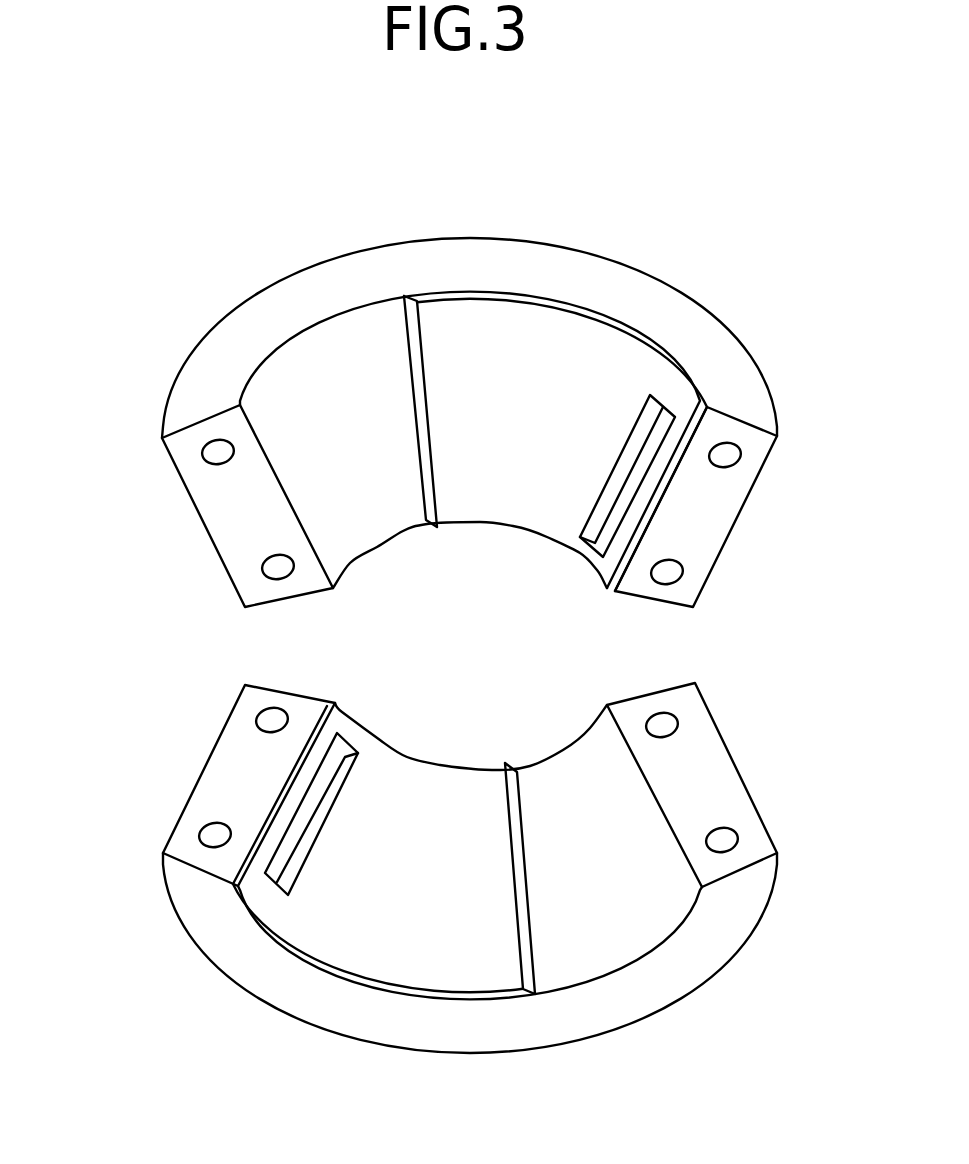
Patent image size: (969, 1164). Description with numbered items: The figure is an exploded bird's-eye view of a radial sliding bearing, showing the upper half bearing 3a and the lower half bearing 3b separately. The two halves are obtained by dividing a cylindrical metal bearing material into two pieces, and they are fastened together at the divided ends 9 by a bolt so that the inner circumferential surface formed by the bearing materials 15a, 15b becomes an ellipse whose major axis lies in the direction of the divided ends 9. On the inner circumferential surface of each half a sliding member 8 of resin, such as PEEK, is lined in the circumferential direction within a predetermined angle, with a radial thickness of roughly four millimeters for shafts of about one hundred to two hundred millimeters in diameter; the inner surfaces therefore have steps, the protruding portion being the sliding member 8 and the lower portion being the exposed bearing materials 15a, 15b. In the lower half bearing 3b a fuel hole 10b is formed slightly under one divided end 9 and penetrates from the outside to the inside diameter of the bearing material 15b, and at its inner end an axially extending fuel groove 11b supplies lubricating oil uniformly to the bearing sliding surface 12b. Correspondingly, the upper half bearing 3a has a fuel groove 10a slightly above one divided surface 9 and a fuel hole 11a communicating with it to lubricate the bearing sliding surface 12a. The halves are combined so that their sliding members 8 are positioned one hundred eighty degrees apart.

The upper half bearing 3a is at (322, 290).
The lower half bearing 3b is at (390, 1017).
The sliding member 8 is at (416, 459).
The divided ends 9 is at (243, 489).
The fuel groove 10a is at (632, 483).
The fuel hole 10b is at (272, 863).
The fuel hole 11a is at (603, 497).
The fuel groove 11b is at (350, 775).
The bearing sliding surface 12a is at (592, 353).
The bearing sliding surface 12b is at (408, 920).
The bearing material 15a is at (603, 284).
The bearing material 15b is at (561, 1013).